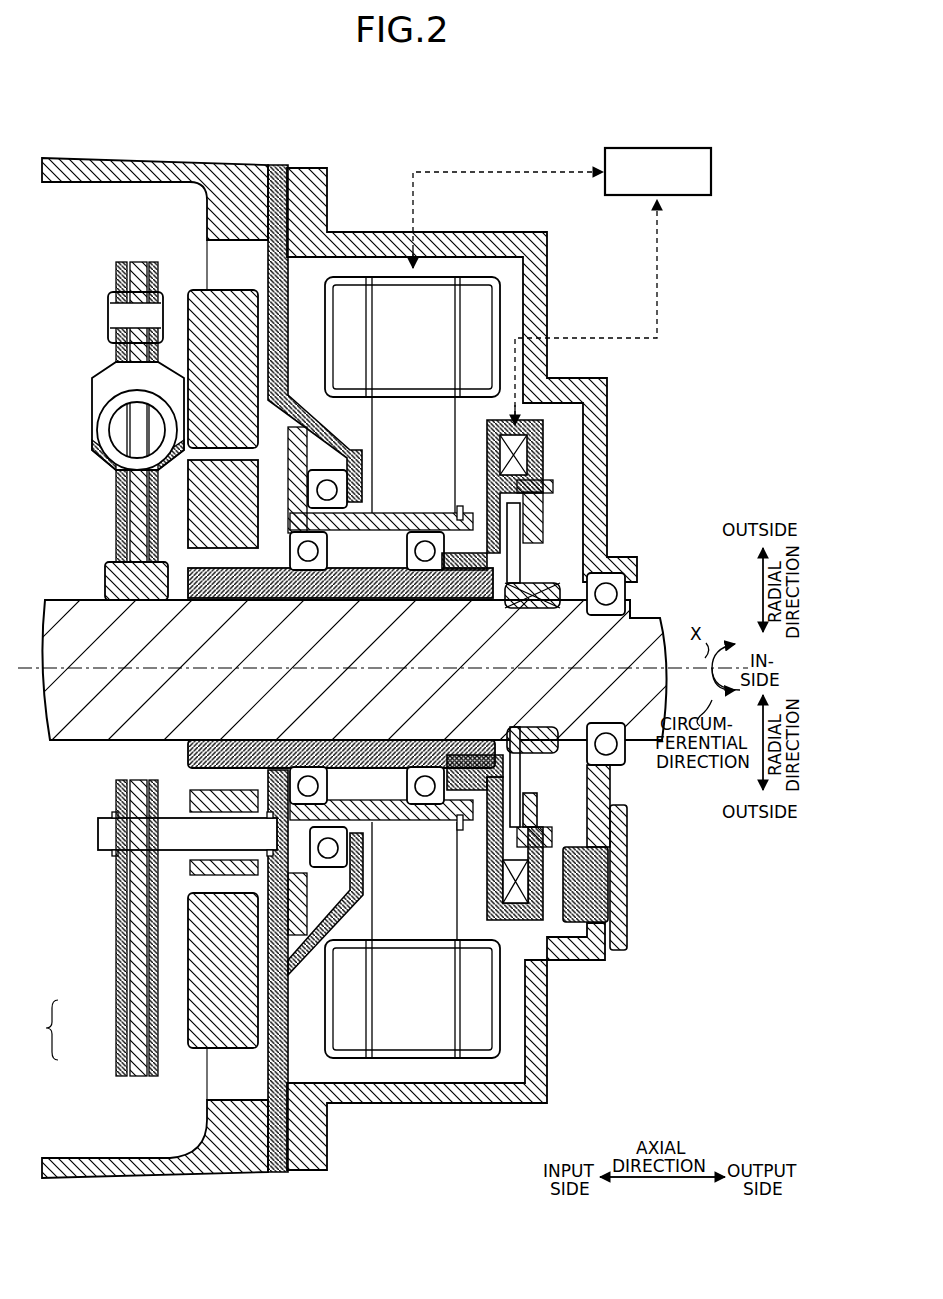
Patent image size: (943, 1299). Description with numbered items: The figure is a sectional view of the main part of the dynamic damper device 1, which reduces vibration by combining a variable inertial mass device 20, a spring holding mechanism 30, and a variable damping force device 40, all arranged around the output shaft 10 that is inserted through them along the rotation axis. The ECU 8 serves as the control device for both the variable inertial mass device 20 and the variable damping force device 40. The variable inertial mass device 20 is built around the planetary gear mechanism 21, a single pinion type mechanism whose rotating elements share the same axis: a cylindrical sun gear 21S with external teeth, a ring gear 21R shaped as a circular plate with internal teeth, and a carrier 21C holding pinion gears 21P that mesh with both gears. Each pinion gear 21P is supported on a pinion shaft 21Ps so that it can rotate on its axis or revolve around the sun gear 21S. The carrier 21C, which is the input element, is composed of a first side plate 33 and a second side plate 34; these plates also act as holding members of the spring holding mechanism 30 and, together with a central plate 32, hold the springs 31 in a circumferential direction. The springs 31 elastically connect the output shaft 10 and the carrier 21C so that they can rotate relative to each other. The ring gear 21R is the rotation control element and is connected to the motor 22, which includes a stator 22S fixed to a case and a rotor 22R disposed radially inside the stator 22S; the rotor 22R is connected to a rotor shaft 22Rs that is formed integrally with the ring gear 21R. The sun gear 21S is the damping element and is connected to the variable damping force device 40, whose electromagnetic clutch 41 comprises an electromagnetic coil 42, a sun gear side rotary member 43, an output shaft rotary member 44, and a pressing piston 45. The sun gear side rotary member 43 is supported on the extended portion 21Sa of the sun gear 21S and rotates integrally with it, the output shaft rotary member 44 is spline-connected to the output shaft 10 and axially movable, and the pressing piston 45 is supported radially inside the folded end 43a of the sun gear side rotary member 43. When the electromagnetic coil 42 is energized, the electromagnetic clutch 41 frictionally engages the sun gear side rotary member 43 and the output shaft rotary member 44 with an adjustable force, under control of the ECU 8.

The dynamic damper device 1 is at (386, 128).
The ECU 8 is at (656, 148).
The output shaft 10 is at (640, 616).
The variable inertial mass device 20 is at (308, 272).
The planetary gear mechanism 21 is at (197, 277).
The ring gear 21R is at (220, 286).
The sun gear 21S is at (207, 742).
The extended portion 21Sa is at (428, 610).
The pinion gear 21P is at (225, 878).
The pinion shaft 21Ps is at (165, 835).
The carrier 21C is at (35, 1030).
The motor 22 is at (445, 272).
The stator 22S is at (418, 316).
The rotor 22R is at (415, 425).
The rotor shaft 22Rs is at (530, 517).
The spring holding mechanism 30 is at (108, 652).
The spring 31 is at (103, 433).
The central plate 32 is at (137, 503).
The first side plate 33 is at (121, 1003).
The second side plate 34 is at (121, 1043).
The variable damping force device 40 is at (562, 474).
The electromagnetic clutch 41 is at (568, 830).
The electromagnetic coil 42 is at (525, 892).
The sun gear side rotary member 43 is at (540, 862).
The folded end 43a is at (540, 452).
The output shaft rotary member 44 is at (515, 778).
The pressing piston 45 is at (533, 805).